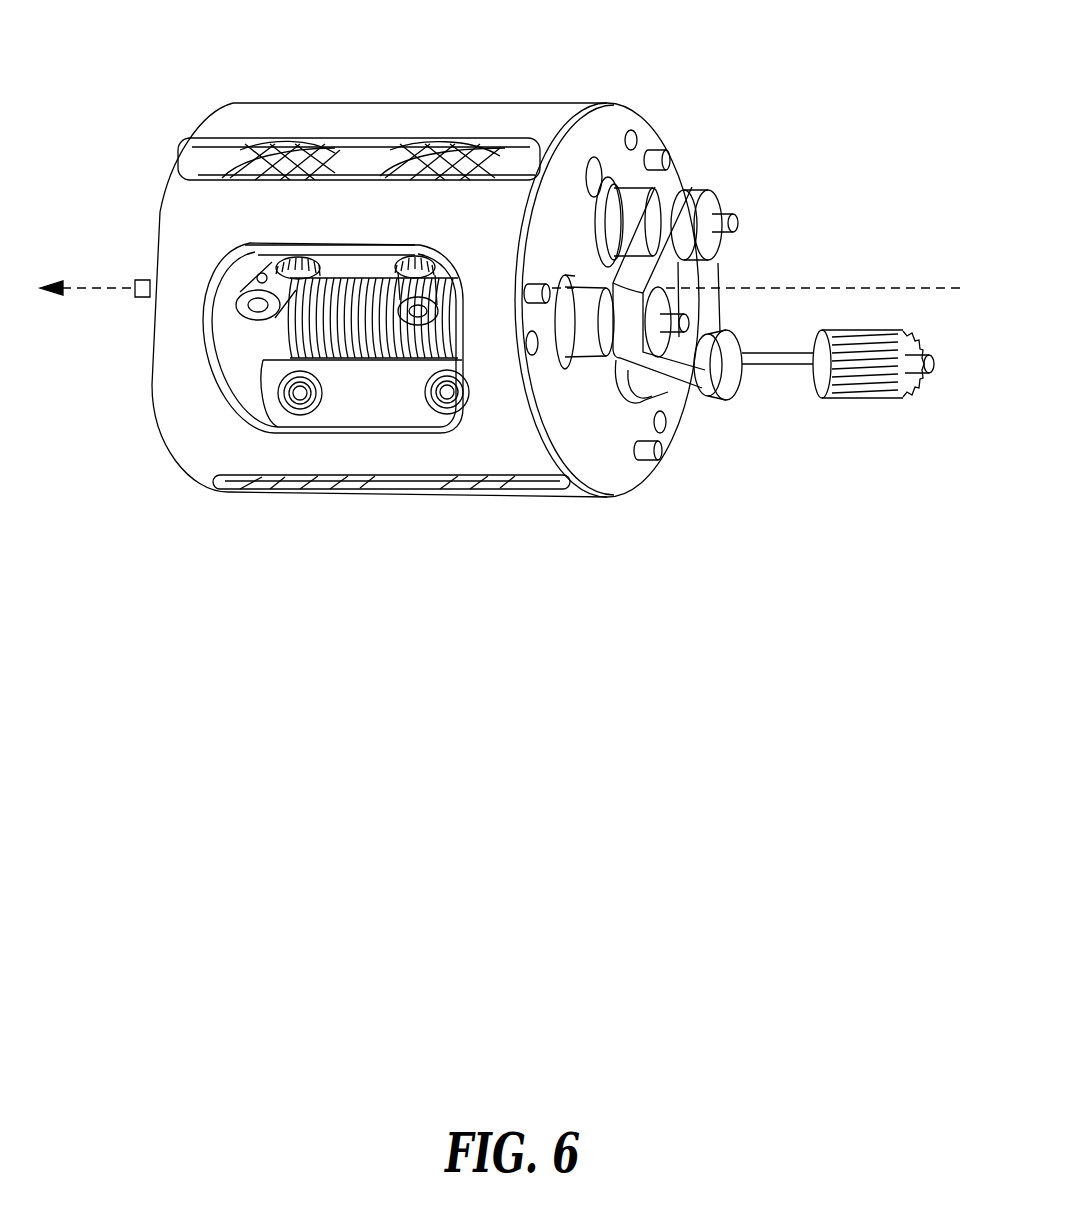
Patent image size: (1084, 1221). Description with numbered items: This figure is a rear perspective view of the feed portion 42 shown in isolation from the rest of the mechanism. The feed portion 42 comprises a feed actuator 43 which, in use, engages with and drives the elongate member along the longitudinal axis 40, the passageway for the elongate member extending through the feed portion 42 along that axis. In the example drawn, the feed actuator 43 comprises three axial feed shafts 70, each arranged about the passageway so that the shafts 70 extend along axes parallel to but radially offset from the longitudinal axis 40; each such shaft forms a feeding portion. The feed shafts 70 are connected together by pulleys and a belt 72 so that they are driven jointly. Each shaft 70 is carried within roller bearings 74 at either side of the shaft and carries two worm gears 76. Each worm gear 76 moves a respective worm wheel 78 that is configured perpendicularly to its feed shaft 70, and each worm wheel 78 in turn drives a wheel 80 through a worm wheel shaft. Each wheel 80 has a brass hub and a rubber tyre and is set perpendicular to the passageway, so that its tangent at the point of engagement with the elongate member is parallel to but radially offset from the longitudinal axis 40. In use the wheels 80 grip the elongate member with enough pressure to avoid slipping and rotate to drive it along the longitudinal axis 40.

The longitudinal axis 40 is at (932, 288).
The feed portion 42 is at (247, 512).
The feed actuator 43 is at (380, 400).
The axial feed shaft 70 is at (717, 222).
The belt 72 is at (673, 213).
The roller bearing 74 is at (636, 197).
The worm gear 76 is at (327, 405).
The worm wheel 78 is at (278, 252).
The wheel 80 is at (420, 143).